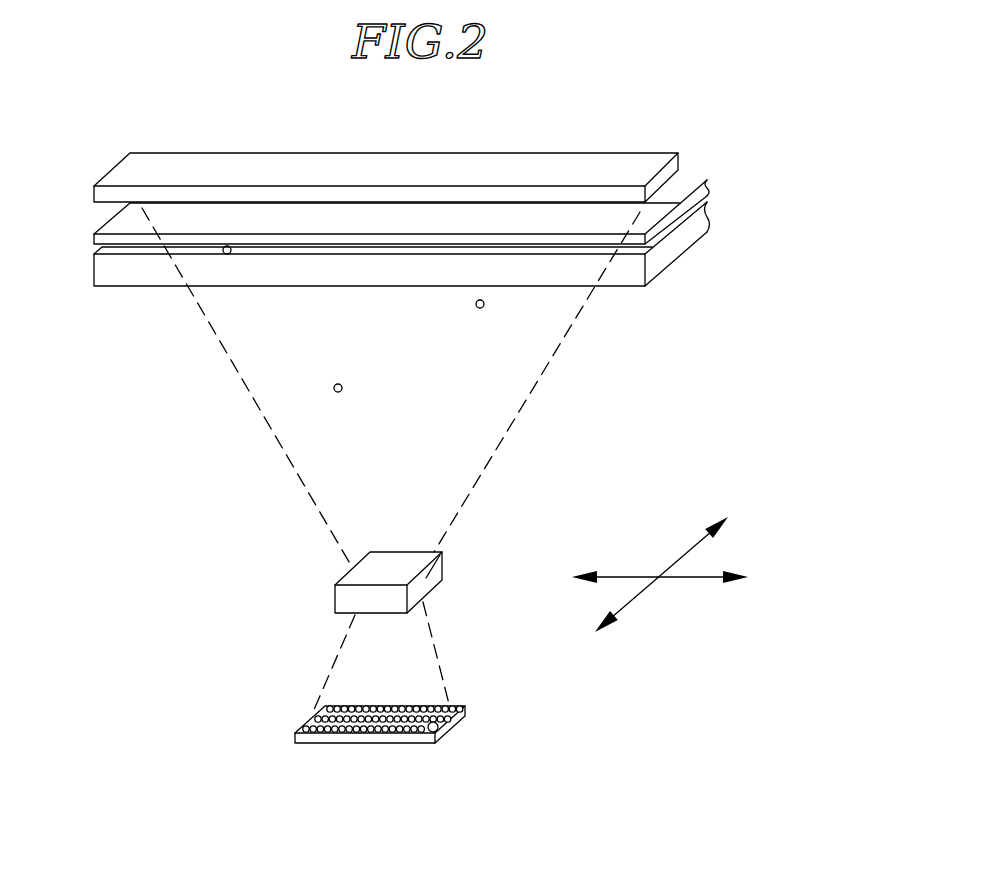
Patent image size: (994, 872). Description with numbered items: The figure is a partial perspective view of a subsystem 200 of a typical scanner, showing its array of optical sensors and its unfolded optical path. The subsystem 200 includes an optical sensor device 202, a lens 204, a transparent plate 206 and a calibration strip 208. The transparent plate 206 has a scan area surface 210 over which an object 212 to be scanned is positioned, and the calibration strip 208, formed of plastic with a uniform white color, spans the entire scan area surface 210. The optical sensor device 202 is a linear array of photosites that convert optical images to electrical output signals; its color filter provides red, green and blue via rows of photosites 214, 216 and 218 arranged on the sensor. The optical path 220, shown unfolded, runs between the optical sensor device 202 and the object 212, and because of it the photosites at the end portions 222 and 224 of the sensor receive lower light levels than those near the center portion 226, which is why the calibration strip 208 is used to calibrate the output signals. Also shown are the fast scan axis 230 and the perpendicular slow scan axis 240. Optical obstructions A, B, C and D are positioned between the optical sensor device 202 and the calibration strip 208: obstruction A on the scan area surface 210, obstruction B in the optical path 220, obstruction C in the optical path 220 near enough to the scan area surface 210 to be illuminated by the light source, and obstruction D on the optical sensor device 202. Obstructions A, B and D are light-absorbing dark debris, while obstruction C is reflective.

The subsystem 200 is at (244, 57).
The optical sensor device 202 is at (388, 778).
The lens 204 is at (458, 595).
The transparent plate 206 is at (648, 288).
The calibration strip 208 is at (584, 147).
The scan area surface 210 is at (440, 252).
The object 212 is at (350, 190).
The row of photosites 214 is at (483, 760).
The row of photosites 216 is at (494, 734).
The row of photosites 218 is at (499, 716).
The optical path 220 is at (570, 417).
The end portion 222 is at (274, 769).
The end portion 224 is at (428, 785).
The center portion 226 is at (332, 773).
The fast scan axis 230 is at (683, 578).
The slow scan axis 240 is at (683, 555).
The optical obstruction A is at (223, 250).
The optical obstruction B is at (334, 388).
The optical obstruction C is at (484, 305).
The optical obstruction D is at (437, 731).